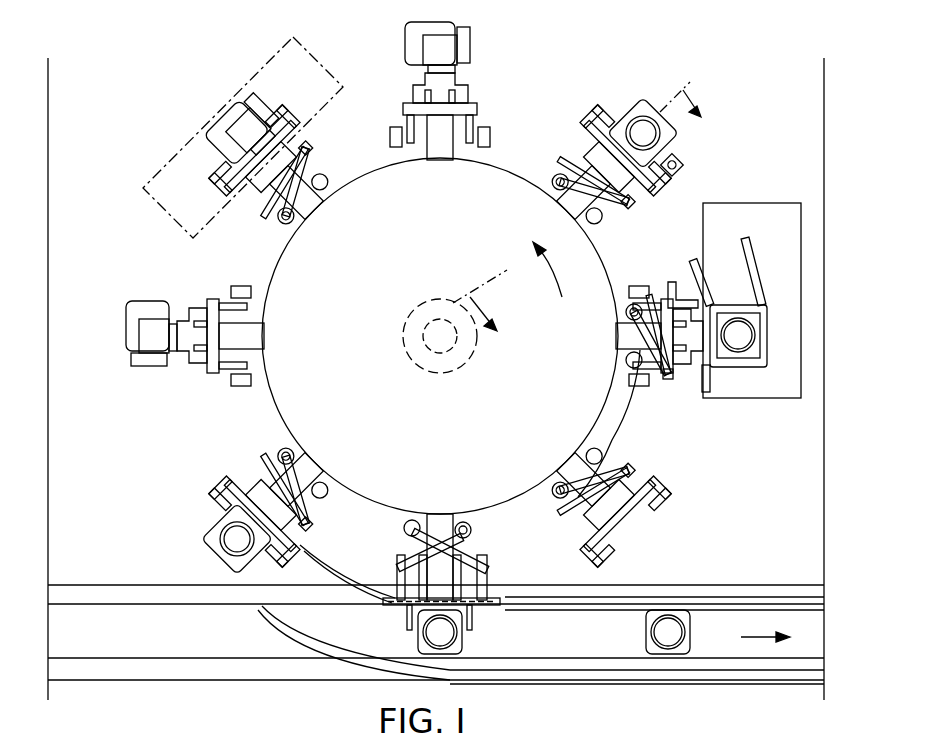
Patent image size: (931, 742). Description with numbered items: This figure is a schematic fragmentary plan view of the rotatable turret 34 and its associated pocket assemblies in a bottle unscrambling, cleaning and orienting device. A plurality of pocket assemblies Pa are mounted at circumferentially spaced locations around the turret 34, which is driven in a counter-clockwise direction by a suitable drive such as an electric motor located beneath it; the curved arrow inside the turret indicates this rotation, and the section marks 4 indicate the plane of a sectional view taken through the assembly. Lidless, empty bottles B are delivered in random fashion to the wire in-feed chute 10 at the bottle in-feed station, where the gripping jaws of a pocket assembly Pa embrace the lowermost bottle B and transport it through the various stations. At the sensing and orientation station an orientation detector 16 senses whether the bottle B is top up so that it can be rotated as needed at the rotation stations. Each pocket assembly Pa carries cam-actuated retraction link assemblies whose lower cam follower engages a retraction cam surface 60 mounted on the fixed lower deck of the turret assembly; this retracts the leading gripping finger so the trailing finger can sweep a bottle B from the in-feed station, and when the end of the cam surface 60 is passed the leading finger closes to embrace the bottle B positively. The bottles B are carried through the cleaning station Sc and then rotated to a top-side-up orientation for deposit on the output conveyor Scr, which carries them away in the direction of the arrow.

The turret 34 is at (508, 163).
The section line 4- 4 is at (576, 194).
The pocket assembly Pa is at (550, 555).
The bottle B is at (410, 36).
The wire in-feed chute 10 is at (766, 253).
The orientation detector 16 is at (686, 162).
The retraction cam surface 60 is at (622, 422).
The cleaning station Sc is at (242, 77).
The output conveyor Scr is at (396, 620).